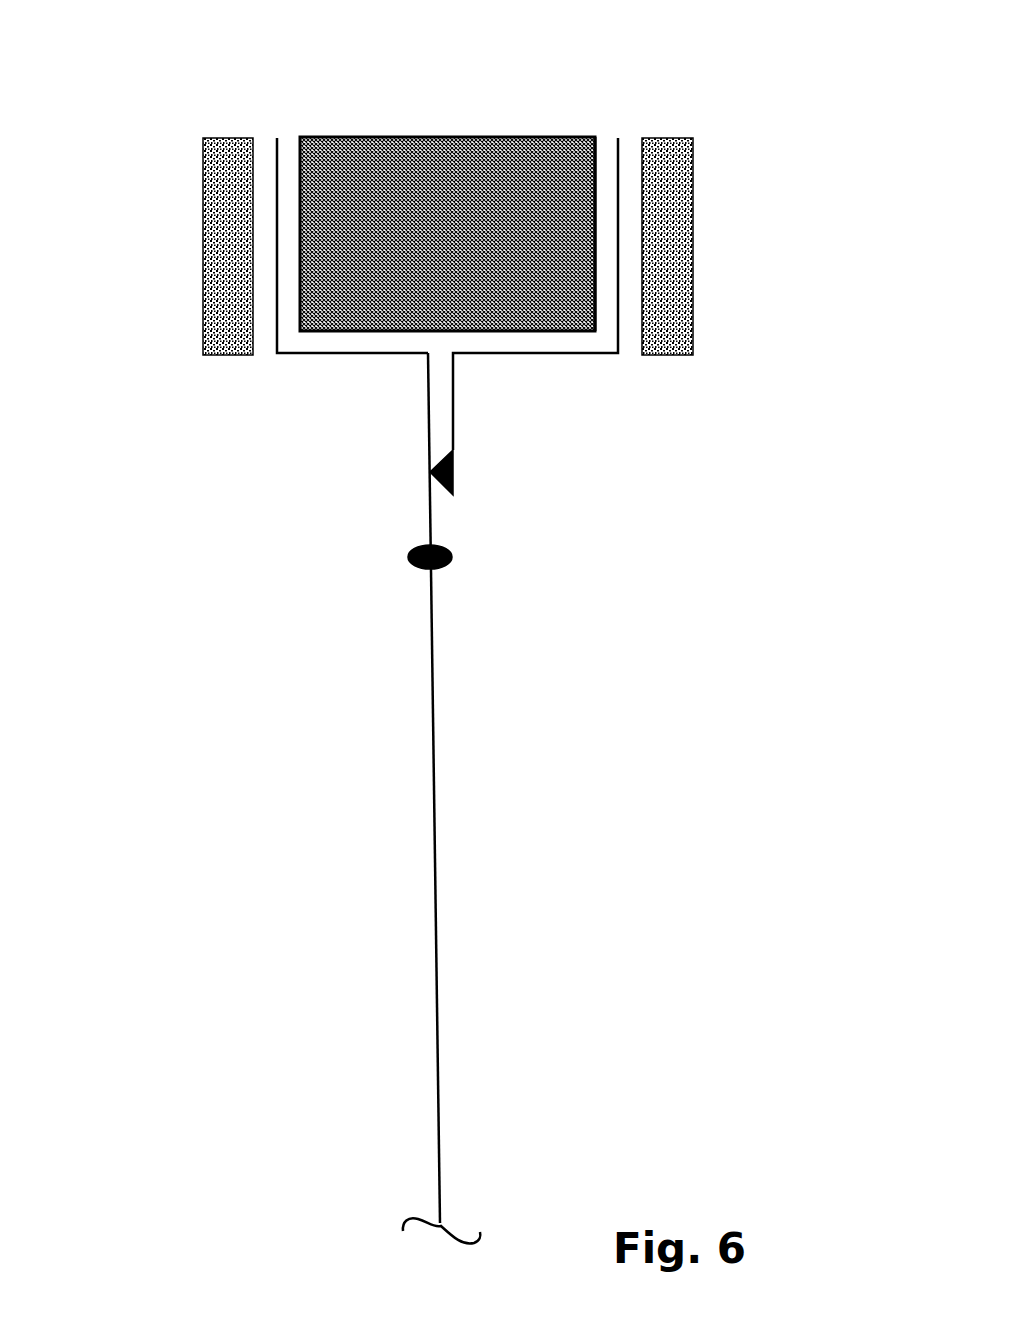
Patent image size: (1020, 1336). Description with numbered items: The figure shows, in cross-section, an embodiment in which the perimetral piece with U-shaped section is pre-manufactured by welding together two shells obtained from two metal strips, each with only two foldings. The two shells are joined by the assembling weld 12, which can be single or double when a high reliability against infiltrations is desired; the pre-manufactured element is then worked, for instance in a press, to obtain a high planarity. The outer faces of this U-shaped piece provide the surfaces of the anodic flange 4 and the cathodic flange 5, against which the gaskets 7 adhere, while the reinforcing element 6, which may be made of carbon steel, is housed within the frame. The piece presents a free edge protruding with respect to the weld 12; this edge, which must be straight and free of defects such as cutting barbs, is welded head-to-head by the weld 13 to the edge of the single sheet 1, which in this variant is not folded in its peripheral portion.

The single sheet 1 is at (435, 740).
The anodic flange 4 is at (278, 335).
The cathodic flange 5 is at (602, 150).
The reinforcing element 6 is at (472, 174).
The gaskets 7 is at (230, 262).
The assembling weld 12 is at (460, 481).
The head-to-head weld 13 is at (454, 561).